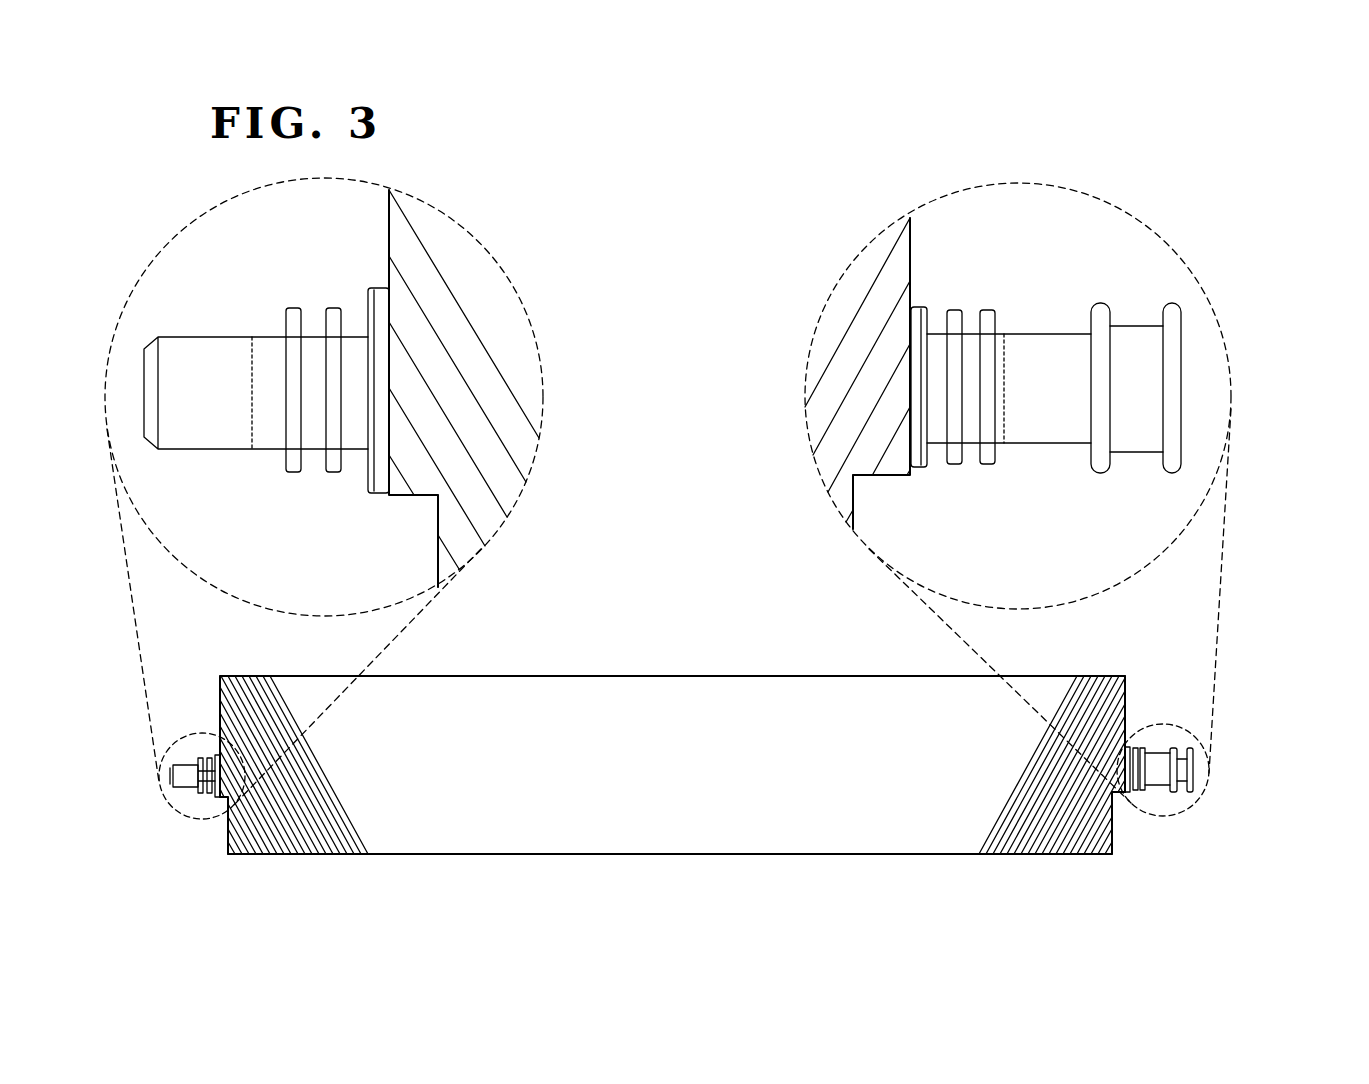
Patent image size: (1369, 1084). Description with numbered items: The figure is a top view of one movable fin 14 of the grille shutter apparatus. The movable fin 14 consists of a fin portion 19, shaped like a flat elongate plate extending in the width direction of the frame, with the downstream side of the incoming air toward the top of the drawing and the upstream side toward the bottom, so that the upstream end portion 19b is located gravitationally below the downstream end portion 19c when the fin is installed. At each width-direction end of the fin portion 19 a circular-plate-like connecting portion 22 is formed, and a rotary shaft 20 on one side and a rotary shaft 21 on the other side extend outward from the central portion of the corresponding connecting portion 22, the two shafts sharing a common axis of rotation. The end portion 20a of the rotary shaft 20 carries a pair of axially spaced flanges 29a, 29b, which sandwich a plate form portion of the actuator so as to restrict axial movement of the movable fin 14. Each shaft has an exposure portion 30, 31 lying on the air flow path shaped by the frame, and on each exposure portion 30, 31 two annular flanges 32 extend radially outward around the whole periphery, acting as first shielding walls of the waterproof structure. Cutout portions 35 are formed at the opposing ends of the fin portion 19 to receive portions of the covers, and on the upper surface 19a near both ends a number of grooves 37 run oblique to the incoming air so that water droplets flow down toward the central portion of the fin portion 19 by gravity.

The movable fin 14 is at (659, 630).
The fin portion 19 is at (222, 676).
The upper surface 19a is at (798, 710).
The end portion 19b is at (582, 858).
The end portion 19c is at (510, 676).
The rotary shaft 20 is at (1051, 334).
The end portion 20a is at (1145, 394).
The rotary shaft 21 is at (173, 337).
The connecting portion 22 is at (379, 493).
The flange 29a is at (1100, 473).
The flange 29b is at (1171, 473).
The exposure portion 30 is at (1004, 334).
The exposure portion 31 is at (268, 337).
The flange 32 is at (340, 472).
The cutout portion 35 is at (438, 515).
The groove 37 is at (460, 410).